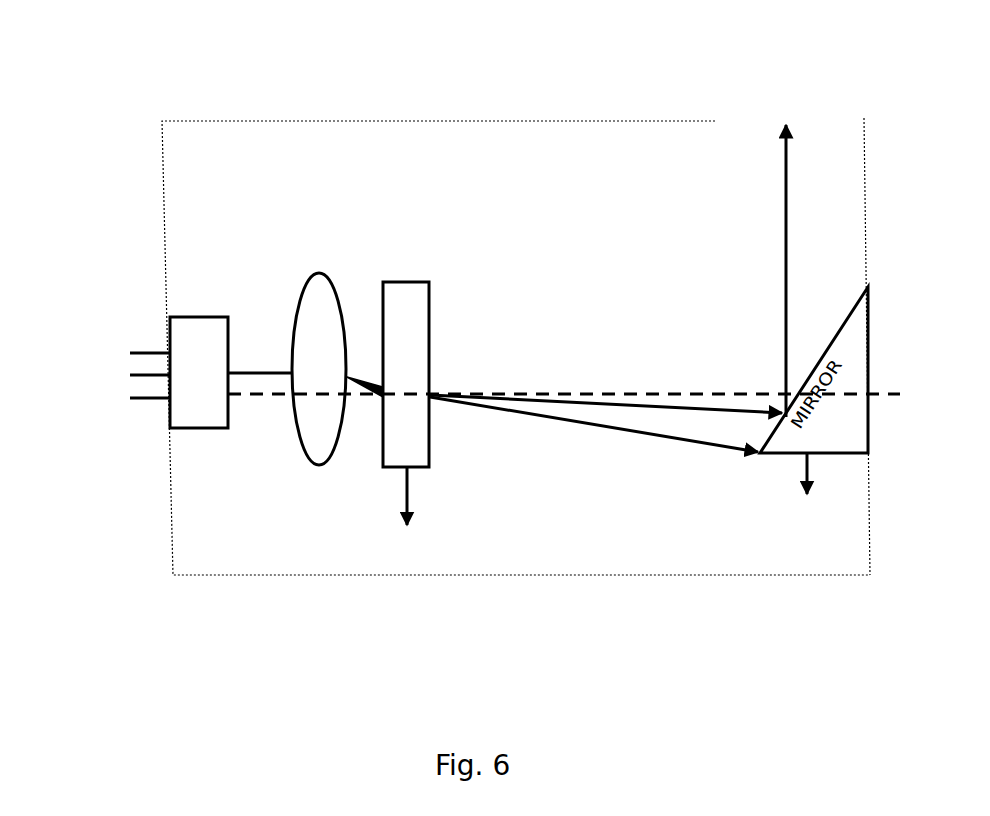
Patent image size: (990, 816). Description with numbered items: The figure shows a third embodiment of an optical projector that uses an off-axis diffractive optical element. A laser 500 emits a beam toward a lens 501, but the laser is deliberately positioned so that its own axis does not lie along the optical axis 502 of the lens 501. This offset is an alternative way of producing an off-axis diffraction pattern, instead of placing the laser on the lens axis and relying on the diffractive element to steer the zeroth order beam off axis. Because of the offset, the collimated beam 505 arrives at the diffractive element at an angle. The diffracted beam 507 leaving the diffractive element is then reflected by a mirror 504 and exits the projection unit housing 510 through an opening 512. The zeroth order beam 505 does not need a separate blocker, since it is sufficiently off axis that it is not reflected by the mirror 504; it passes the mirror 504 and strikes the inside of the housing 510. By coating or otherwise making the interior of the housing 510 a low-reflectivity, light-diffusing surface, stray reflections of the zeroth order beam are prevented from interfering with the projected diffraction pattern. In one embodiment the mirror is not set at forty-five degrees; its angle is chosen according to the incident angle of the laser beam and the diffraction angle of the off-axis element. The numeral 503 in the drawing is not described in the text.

The laser 500 is at (166, 314).
The lens 501 is at (298, 272).
The optical axis 502 is at (564, 372).
The diffracted beam exiting diffraction element 503 is at (406, 430).
The mirror 504 is at (800, 493).
The zeroth order beam 505 is at (602, 433).
The diffracted beam 507 is at (620, 247).
The projection unit housing 510 is at (863, 533).
The opening 512 is at (846, 103).